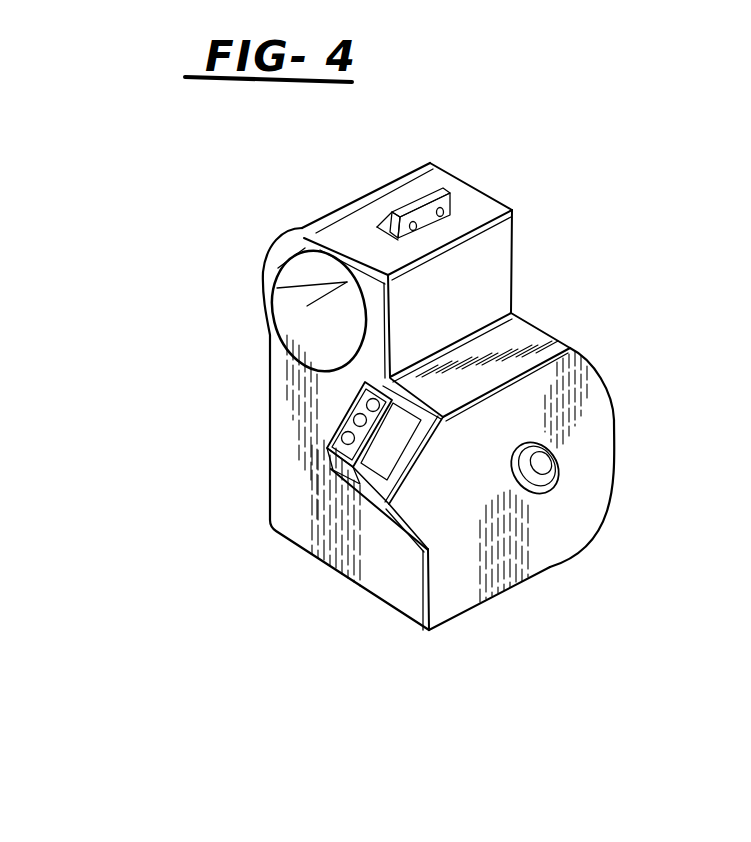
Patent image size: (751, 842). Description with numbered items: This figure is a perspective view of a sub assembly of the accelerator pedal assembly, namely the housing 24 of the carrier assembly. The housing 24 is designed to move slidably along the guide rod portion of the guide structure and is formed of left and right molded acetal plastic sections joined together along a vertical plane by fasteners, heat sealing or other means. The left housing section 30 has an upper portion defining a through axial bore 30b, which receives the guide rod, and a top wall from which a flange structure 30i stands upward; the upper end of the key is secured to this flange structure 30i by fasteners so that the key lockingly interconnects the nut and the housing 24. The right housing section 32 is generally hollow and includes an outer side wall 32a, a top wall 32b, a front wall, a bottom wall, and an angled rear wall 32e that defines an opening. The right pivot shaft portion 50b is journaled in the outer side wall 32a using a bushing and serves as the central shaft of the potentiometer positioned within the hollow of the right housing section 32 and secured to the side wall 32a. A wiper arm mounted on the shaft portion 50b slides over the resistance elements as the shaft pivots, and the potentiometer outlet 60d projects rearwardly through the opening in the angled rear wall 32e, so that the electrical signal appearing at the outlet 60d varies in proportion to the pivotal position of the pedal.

The housing 24 is at (256, 489).
The left housing section 30 is at (271, 417).
The through axial bore 30b is at (290, 290).
The flange structure 30i is at (440, 189).
The right housing section 32 is at (624, 381).
The outer side wall 32a is at (603, 428).
The top wall 32b is at (548, 347).
The angled rear wall 32e is at (407, 600).
The right pivot shaft portion 50b is at (547, 485).
The potentiometer outlet 60d is at (372, 458).